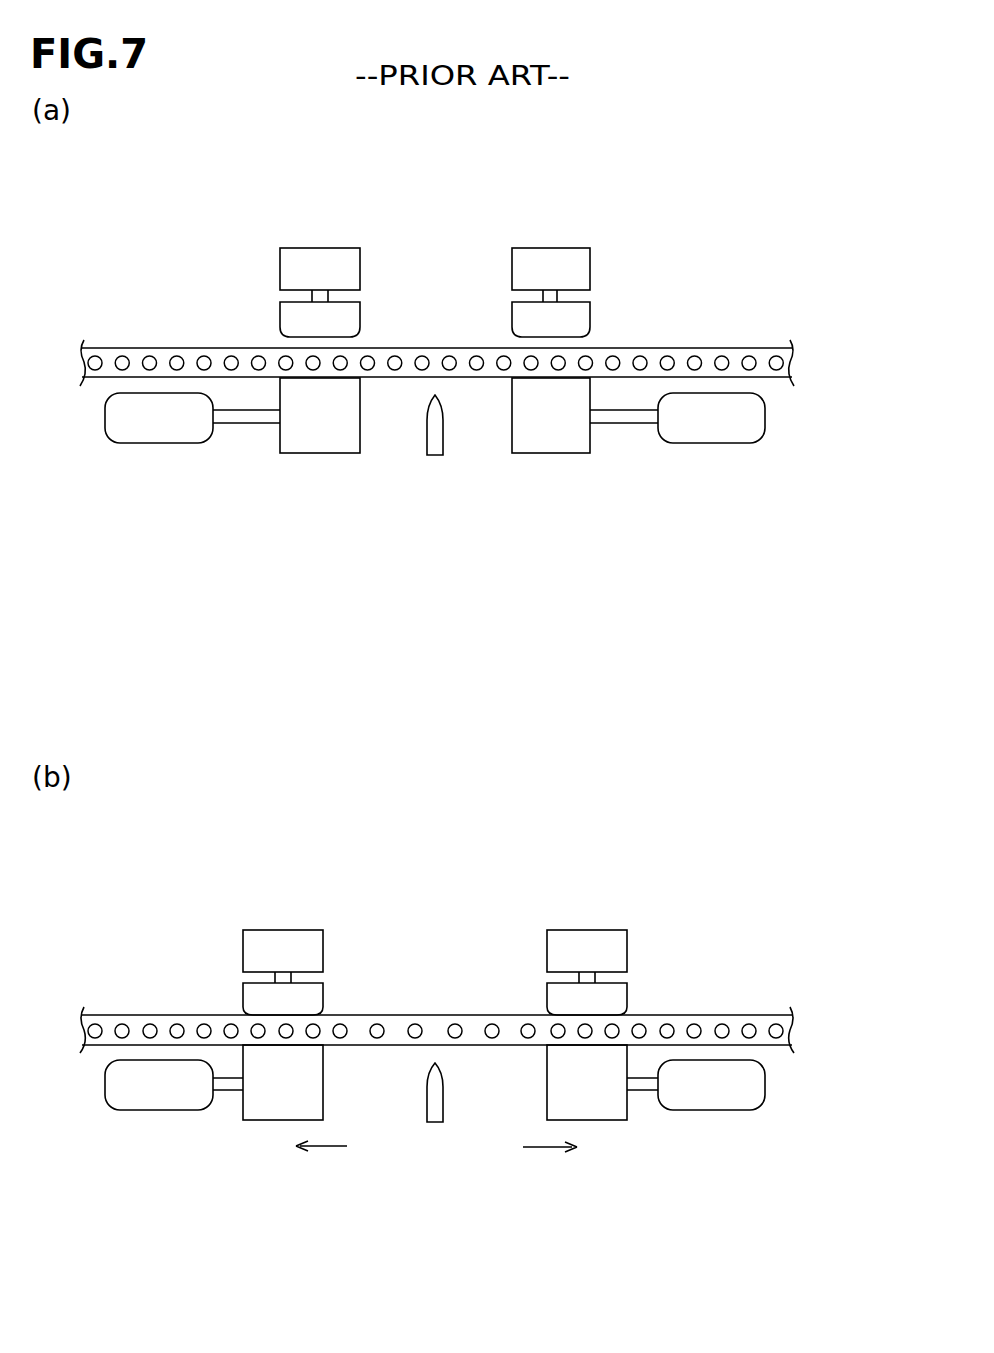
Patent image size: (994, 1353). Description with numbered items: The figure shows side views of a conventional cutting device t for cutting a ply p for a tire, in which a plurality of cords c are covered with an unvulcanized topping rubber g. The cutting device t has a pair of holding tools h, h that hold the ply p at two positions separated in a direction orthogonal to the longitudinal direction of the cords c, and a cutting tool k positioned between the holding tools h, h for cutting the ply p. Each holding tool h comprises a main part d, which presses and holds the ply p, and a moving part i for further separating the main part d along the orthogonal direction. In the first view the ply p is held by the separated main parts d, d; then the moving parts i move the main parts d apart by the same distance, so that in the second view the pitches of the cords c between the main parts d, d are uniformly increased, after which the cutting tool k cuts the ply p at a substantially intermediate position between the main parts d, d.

The cutting device t is at (712, 223).
The ply p is at (498, 701).
The cords c is at (750, 362).
The topping rubber g is at (763, 372).
The holding tool h is at (435, 821).
The main part d is at (320, 453).
The moving part i is at (303, 554).
The cutting tool k is at (435, 437).